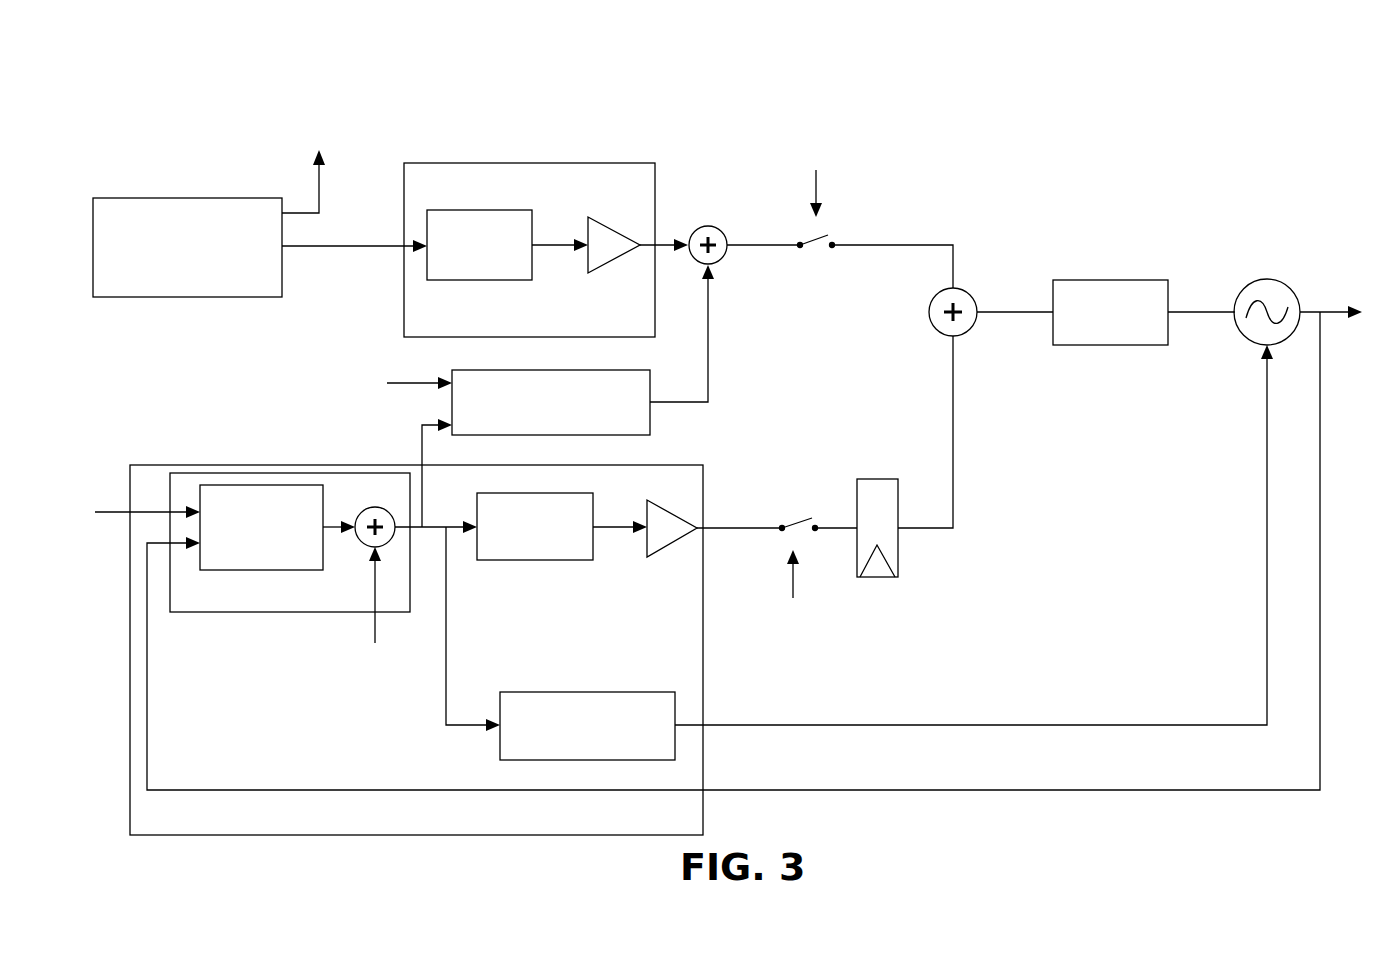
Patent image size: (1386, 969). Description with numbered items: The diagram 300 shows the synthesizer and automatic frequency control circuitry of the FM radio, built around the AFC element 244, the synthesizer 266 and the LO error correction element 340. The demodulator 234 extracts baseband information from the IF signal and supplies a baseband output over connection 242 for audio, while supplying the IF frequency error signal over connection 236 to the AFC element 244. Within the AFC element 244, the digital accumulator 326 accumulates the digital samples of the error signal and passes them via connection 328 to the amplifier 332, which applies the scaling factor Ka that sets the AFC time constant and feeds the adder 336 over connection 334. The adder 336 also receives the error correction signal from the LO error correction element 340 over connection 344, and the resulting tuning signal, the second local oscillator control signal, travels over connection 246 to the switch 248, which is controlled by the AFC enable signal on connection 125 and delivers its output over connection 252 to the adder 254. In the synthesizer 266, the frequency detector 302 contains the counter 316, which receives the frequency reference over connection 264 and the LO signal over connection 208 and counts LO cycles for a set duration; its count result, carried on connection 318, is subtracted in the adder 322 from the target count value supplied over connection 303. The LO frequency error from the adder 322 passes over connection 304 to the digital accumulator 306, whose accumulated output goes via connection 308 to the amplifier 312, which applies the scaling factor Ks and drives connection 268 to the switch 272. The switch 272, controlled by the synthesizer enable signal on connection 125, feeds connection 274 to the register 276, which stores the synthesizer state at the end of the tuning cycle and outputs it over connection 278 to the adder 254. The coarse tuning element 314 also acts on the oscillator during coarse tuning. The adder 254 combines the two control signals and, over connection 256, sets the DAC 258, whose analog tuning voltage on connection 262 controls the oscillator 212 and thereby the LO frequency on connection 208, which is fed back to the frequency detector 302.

The diagram 300 is at (150, 54).
The demodulator 234 is at (145, 294).
The connection 242 is at (318, 190).
The connection 236 is at (299, 248).
The AFC element 244 is at (500, 196).
The digital accumulator 326 is at (473, 279).
The connection 328 is at (554, 240).
The connection 334 is at (648, 250).
The amplifier 332 is at (589, 278).
The adder 336 is at (696, 231).
The connection 125 is at (812, 185).
The connection 246 is at (750, 247).
The switch 248 is at (819, 270).
The connection 252 is at (905, 245).
The adder 254 is at (966, 292).
The connection 256 is at (983, 314).
The digital-to-analog converter 258 is at (1100, 342).
The connection 262 is at (1217, 313).
The oscillator 212 is at (1238, 299).
The connection 208 is at (1310, 312).
The LO error correction element 340 is at (495, 397).
The LO error correction output 344 is at (708, 357).
The synthesizer 266 is at (333, 832).
The frequency detector 302 is at (220, 609).
The counter 316 is at (248, 567).
The connection 264 is at (125, 513).
The adder 322 is at (362, 513).
The counter output 318 is at (332, 532).
The connection 303 is at (375, 622).
The connection 304 is at (430, 527).
The digital accumulator 306 is at (523, 561).
The accumulator output 308 is at (608, 522).
The amplifier 312 is at (647, 560).
The connection 268 is at (717, 529).
The switch 272 is at (796, 492).
The connection 274 is at (836, 528).
The register 276 is at (898, 552).
The connection 278 is at (935, 529).
The coarse tuning element 314 is at (547, 754).